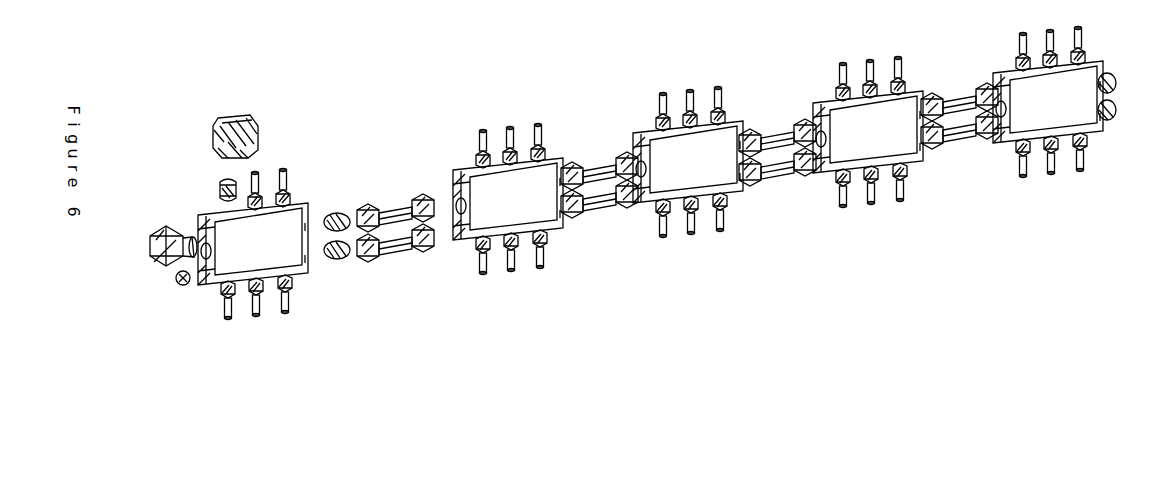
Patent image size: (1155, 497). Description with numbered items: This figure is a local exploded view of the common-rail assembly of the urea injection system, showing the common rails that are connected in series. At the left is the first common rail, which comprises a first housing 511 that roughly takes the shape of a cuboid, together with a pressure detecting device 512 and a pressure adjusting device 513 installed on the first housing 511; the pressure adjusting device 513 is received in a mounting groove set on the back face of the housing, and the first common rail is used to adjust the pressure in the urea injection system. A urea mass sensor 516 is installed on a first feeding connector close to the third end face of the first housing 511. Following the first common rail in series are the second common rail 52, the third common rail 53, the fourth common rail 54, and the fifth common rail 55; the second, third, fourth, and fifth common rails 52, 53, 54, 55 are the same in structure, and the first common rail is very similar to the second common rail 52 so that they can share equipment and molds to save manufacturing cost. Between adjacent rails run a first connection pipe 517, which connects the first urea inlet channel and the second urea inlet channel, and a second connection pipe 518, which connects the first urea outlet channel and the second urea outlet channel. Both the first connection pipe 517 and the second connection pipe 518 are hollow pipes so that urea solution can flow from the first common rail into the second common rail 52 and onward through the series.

The first housing 511 is at (285, 258).
The pressure detecting device 512 is at (156, 262).
The pressure adjusting device 513 is at (160, 236).
The urea mass sensor 516 is at (228, 113).
The first connection pipe 517 is at (400, 213).
The second connection pipe 518 is at (397, 237).
The second common rail 52 is at (543, 212).
The third common rail 53 is at (728, 173).
The fourth common rail 54 is at (908, 135).
The fifth common rail 55 is at (1080, 105).